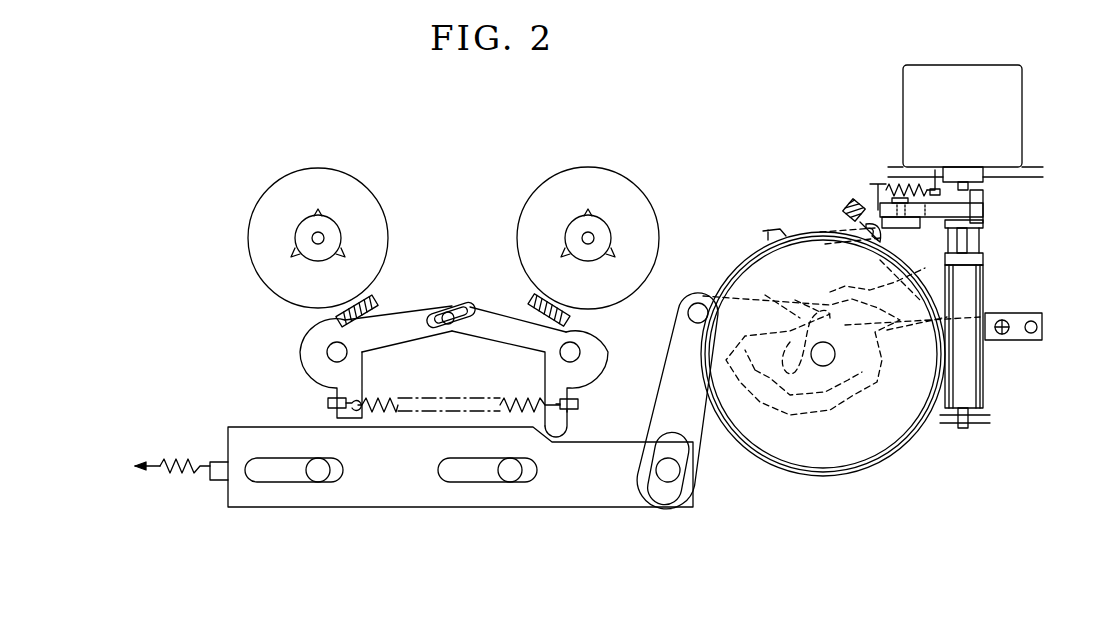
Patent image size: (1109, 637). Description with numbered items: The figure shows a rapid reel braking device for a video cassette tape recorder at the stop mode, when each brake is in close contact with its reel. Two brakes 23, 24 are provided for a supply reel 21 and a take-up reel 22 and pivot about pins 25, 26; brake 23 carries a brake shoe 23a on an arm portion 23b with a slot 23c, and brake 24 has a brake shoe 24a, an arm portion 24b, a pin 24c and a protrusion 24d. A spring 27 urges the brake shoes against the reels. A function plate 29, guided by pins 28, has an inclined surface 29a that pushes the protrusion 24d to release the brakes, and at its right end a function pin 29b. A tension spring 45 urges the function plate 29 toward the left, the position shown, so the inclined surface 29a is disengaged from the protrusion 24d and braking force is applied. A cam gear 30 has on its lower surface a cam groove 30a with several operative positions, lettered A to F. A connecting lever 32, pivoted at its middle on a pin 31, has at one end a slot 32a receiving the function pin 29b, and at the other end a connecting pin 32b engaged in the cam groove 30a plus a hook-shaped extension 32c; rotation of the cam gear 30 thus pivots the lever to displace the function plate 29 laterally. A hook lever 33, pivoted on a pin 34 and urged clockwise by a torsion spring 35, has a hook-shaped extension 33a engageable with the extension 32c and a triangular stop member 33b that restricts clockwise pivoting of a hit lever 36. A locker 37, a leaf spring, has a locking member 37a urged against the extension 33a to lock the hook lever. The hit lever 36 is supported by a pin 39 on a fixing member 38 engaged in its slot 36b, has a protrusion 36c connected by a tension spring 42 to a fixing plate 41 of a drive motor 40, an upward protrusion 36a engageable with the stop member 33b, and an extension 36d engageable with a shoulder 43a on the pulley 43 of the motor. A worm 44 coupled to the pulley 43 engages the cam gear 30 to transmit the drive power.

The supply reel 21 is at (316, 172).
The take-up reel 22 is at (592, 172).
The brake 23 is at (336, 322).
The brake pad 23a is at (372, 292).
The arm portion 23b is at (402, 332).
The slot 23c is at (438, 308).
The brake 24 is at (549, 340).
The brake pad 24a is at (540, 306).
The arm portion 24b is at (505, 332).
The pin 24c is at (449, 312).
The protrusion 24d is at (572, 422).
The pin 25 is at (327, 348).
The pin 26 is at (579, 348).
The spring 27 is at (336, 396).
The guide pin 28 is at (318, 481).
The function plate 29 is at (451, 492).
The inclined surface 29a is at (550, 445).
The function pin 29b is at (651, 497).
The cam gear 30 is at (823, 391).
The cam groove 30a is at (829, 412).
The pin 31 is at (697, 303).
The connecting lever 32 is at (677, 411).
The slot 32a is at (675, 511).
The connecting pin 32b is at (765, 295).
The hook-shaped extension 32c is at (795, 300).
The hook lever 33 is at (915, 292).
The hook-shaped extension 33a is at (887, 322).
The triangular stop member 33b is at (847, 213).
The pin 34 is at (855, 238).
The torsion spring 35 is at (790, 233).
The hit lever 36 is at (927, 159).
The upward protrusion 36a is at (852, 200).
The slot 36b is at (840, 132).
The protrusion 36c is at (900, 197).
The extension 36d is at (961, 212).
The locker 37 is at (882, 320).
The locking member 37a is at (900, 342).
The fixing member 38 is at (905, 229).
The pin 39 is at (936, 165).
The drive motor 40 is at (910, 108).
The fixing plate 41 is at (920, 170).
The tension spring 42 is at (882, 180).
The pulley 43 is at (985, 222).
The shoulder 43a is at (976, 217).
The worm 44 is at (982, 390).
The tension spring 45 is at (175, 477).